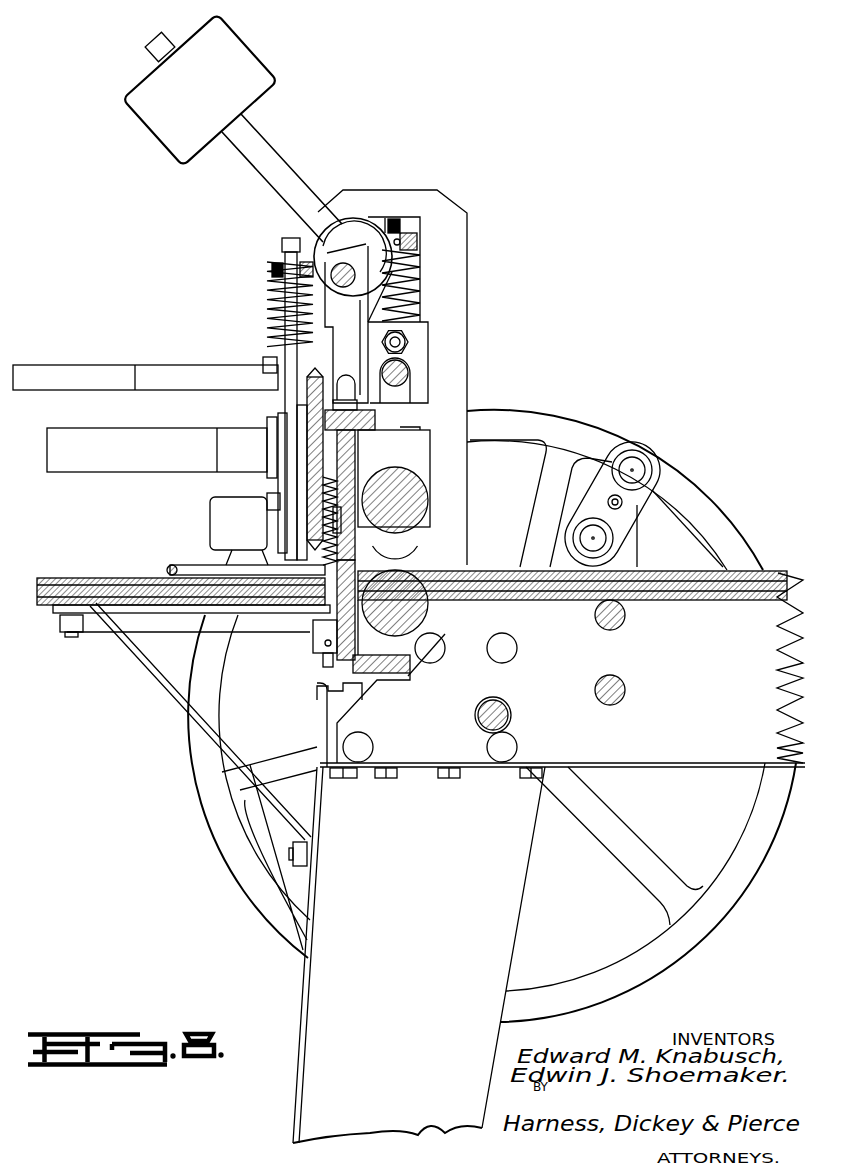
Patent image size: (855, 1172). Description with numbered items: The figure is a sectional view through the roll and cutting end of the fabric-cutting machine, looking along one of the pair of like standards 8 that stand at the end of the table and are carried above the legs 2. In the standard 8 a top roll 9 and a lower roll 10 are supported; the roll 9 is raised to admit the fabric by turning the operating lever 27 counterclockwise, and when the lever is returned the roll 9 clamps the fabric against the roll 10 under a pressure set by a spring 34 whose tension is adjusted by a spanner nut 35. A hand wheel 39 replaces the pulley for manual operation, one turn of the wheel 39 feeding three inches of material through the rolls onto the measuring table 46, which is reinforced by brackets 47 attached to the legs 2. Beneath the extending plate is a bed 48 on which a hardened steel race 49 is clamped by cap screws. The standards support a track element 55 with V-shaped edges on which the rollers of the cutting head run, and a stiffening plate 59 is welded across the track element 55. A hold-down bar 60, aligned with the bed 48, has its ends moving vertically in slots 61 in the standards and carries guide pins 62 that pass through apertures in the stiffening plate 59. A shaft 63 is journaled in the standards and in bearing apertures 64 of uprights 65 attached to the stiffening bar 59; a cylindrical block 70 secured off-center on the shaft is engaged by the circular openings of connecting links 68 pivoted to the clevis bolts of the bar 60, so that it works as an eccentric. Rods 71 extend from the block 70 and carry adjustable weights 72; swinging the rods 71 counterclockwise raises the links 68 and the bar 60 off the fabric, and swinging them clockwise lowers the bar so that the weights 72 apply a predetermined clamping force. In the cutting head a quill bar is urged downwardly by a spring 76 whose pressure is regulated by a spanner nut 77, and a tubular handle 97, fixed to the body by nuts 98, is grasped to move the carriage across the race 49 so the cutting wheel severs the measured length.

The legs 2 is at (313, 963).
The standard 8 is at (450, 313).
The top roll 9 is at (471, 487).
The lower roll 10 is at (432, 616).
The operating lever 27 is at (93, 348).
The spring 34 is at (410, 290).
The spanner nut 35 is at (418, 243).
The hand wheel 39 is at (713, 903).
The measuring table 46 is at (113, 580).
The brackets 47 is at (150, 677).
The bed 48 is at (337, 670).
The hardened steel race 49 is at (307, 630).
The track element 55 is at (307, 383).
The stiffening plate 59 is at (370, 422).
The hold-down bar 60 is at (350, 472).
The slots 61 is at (350, 555).
The guide pins 62 is at (346, 376).
The shaft 63 is at (340, 287).
The bearing apertures 64 is at (400, 240).
The uprights 65 is at (352, 256).
The connecting links 68 is at (348, 233).
The cylindrical block 70 is at (358, 218).
The rods 71 is at (266, 146).
The adjustable weights 72 is at (136, 113).
The spring 76 is at (270, 298).
The spanner nut 77 is at (275, 266).
The tubular handle 97 is at (148, 430).
The nuts 98 is at (262, 437).